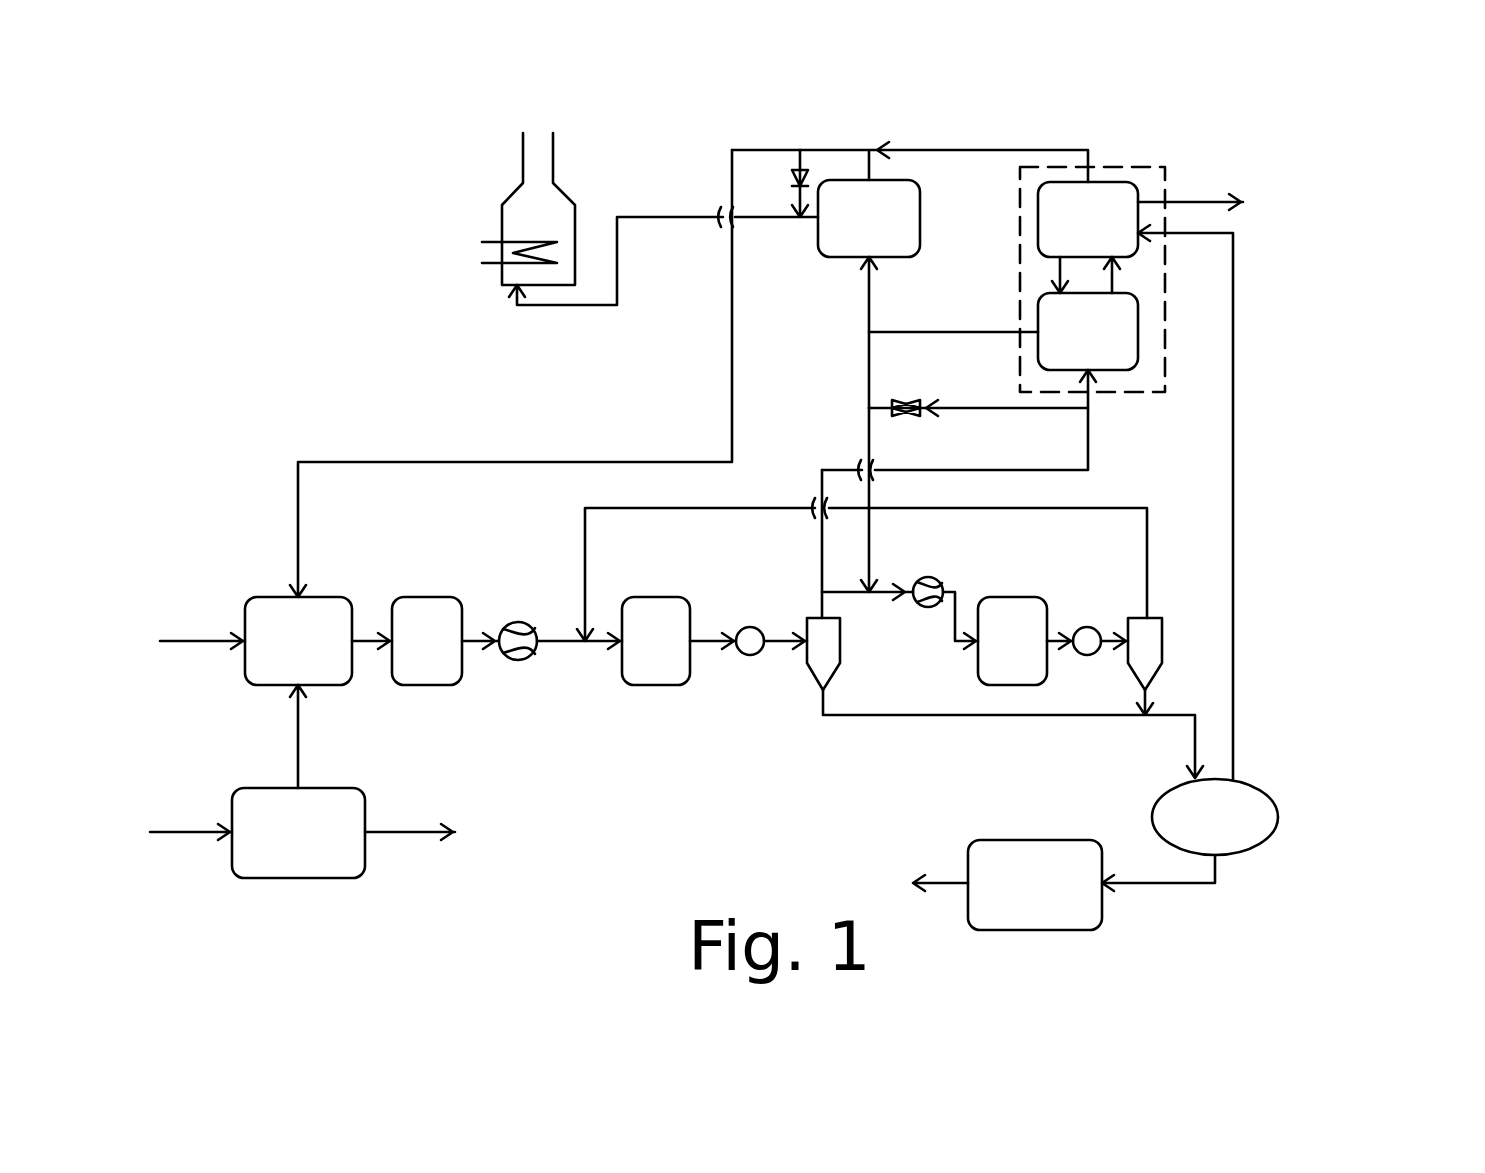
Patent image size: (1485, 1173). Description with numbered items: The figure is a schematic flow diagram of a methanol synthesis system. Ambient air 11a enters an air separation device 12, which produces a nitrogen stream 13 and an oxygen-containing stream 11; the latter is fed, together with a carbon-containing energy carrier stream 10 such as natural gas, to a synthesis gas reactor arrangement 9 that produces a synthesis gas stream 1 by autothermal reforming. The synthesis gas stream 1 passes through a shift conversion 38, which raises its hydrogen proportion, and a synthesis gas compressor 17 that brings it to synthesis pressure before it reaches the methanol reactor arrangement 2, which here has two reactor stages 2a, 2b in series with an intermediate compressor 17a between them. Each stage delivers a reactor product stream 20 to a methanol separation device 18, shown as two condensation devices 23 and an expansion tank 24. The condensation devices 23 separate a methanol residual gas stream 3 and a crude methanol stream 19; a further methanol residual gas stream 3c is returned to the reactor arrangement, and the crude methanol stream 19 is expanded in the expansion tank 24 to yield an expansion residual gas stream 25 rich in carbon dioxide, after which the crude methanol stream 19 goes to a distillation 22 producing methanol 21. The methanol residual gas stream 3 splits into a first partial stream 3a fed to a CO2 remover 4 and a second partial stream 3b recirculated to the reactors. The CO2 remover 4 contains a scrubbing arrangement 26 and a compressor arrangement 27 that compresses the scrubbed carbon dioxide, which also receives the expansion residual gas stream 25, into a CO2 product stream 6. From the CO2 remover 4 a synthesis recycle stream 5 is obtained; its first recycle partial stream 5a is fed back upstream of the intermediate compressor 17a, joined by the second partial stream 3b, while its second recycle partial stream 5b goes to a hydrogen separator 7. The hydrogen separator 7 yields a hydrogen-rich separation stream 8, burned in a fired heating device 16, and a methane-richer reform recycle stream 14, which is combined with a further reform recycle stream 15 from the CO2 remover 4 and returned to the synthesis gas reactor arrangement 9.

The synthesis gas stream 1 is at (358, 642).
The methanol reactor arrangement 2 is at (805, 745).
The first reactor stage 2a is at (656, 641).
The second reactor stage 2b is at (1012, 641).
The methanol residual gas stream 3 is at (820, 490).
The first partial stream 3a is at (1090, 397).
The second partial stream 3b is at (1020, 410).
The further methanol residual gas stream 3c is at (585, 527).
The CO2 remover 4 is at (1008, 248).
The synthesis recycle stream 5 is at (918, 332).
The first recycle partial stream 5a is at (868, 450).
The second recycle partial stream 5b is at (865, 300).
The CO2 product stream 6 is at (1187, 202).
The hydrogen separator 7 is at (869, 218).
The separation stream 8 is at (664, 217).
The synthesis gas reactor arrangement 9 is at (298, 641).
The carbon-containing energy carrier stream 10 is at (190, 640).
The oxygen-containing stream 11 is at (298, 738).
The ambient air 11a is at (188, 833).
The air separation device 12 is at (298, 833).
The nitrogen stream 13 is at (395, 832).
The reform recycle stream 14 is at (540, 462).
The further reform recycle stream 15 is at (1020, 150).
The fired heating device 16 is at (503, 200).
The synthesis gas compressor 17 is at (537, 660).
The intermediate compressor 17a is at (942, 580).
The methanol separation device 18 is at (1131, 736).
The crude methanol stream 19 is at (1193, 733).
The reactor product stream 20 is at (700, 640).
The methanol 21 is at (945, 883).
The distillation 22 is at (1035, 885).
The condensation device 23 is at (840, 652).
The expansion tank 24 is at (1275, 800).
The expansion residual gas stream 25 is at (1233, 515).
The scrubbing arrangement 26 is at (1088, 331).
The compressor arrangement 27 is at (1088, 219).
The shift conversion 38 is at (427, 641).